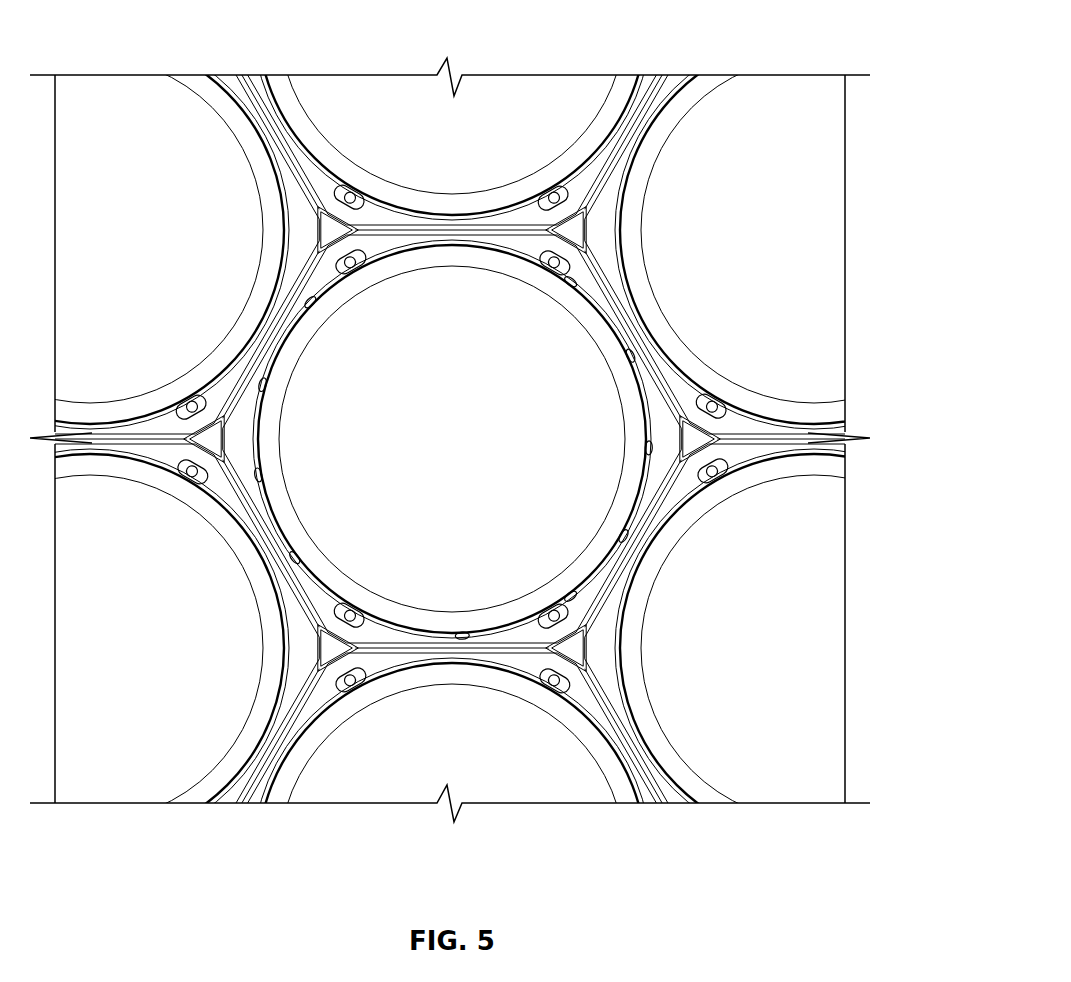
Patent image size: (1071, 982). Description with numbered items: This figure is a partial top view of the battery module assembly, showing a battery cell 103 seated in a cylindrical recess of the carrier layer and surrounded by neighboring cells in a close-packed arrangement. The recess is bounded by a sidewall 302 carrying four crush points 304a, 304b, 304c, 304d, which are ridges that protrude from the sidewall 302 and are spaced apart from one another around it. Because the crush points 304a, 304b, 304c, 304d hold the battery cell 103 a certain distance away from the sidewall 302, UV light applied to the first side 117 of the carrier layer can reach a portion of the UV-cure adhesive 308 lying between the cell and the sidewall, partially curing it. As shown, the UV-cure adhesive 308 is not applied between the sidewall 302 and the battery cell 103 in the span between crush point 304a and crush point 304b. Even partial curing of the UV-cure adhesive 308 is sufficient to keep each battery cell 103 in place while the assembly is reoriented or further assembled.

The battery cell 103 is at (637, 486).
The sidewall 302 is at (637, 361).
The UV-cure adhesive 308 is at (628, 357).
The first side 117 is at (668, 437).
The crush point 304a is at (340, 264).
The crush point 304b is at (545, 263).
The crush point 304c is at (548, 616).
The crush point 304d is at (345, 616).